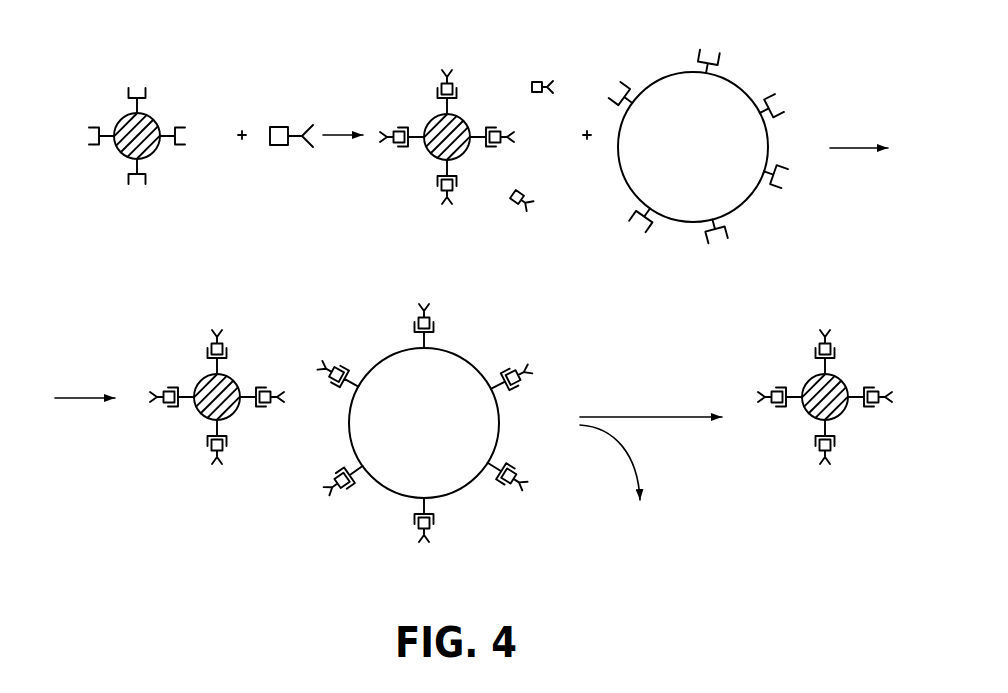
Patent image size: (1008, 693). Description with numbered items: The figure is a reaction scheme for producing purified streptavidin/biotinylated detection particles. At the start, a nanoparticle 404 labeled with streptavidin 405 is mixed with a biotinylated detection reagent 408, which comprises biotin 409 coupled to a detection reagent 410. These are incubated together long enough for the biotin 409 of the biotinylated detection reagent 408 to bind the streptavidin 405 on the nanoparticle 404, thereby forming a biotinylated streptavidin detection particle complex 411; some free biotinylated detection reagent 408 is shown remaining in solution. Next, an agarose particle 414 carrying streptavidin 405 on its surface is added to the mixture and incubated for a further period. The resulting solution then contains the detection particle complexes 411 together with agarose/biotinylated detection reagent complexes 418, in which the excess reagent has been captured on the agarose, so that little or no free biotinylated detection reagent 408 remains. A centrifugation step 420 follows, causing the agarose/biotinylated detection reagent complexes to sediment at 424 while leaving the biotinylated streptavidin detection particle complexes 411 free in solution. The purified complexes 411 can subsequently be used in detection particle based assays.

The nanoparticle 404 is at (113, 167).
The streptavidin 405 is at (190, 133).
The biotinylated detection reagent 408 is at (548, 42).
The biotin 409 is at (277, 120).
The detection reagent 410 is at (313, 120).
The biotinylated streptavidin detection particle complex 411 is at (420, 168).
The agarose particle 414 is at (705, 153).
The agarose/biotinylated detection reagent complex 418 is at (438, 436).
The centrifugation step 420 is at (662, 398).
The sedimentation of agarose/biotinylated detection reagent complexes 424 is at (660, 541).